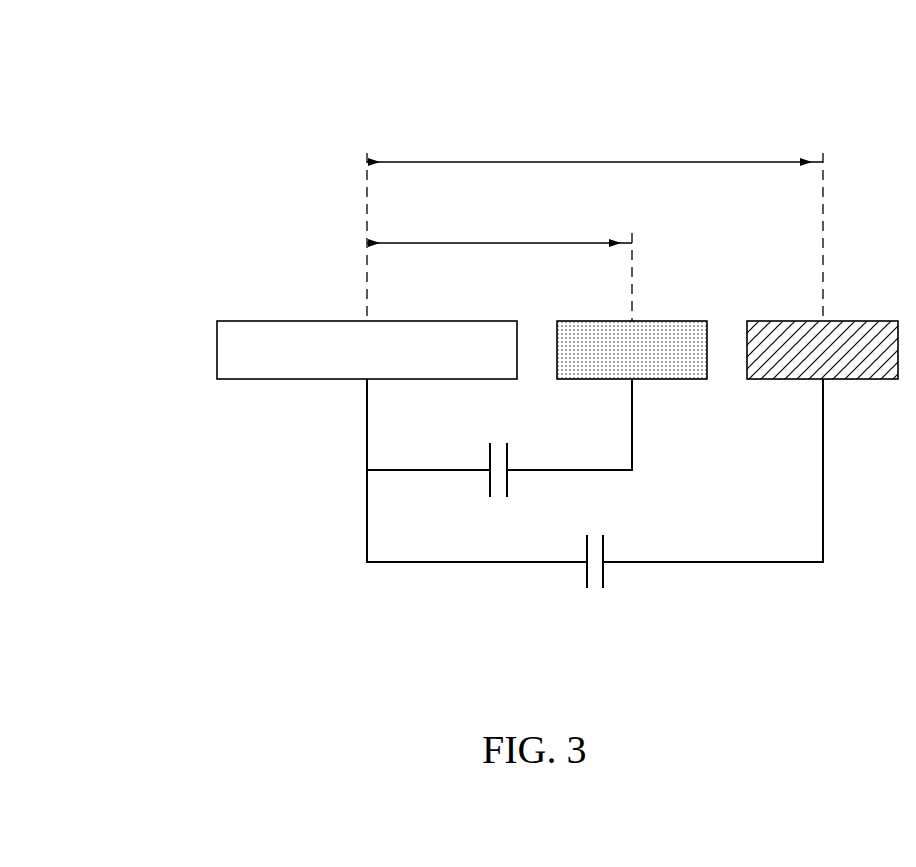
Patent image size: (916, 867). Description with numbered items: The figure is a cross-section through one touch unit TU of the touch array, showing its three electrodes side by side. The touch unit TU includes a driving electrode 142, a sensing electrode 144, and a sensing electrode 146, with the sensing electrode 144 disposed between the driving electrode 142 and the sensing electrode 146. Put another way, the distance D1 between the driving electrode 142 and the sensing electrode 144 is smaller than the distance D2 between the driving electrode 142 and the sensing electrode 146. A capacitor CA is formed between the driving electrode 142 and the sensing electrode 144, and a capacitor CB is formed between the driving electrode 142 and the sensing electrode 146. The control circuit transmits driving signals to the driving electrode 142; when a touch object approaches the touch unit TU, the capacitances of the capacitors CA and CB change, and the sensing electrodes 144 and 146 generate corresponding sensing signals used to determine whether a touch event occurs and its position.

The touch unit TU is at (153, 57).
The driving electrode 142 is at (288, 328).
The sensing electrode 144 is at (683, 328).
The sensing electrode 146 is at (878, 328).
The capacitor CA is at (497, 488).
The capacitor CB is at (591, 578).
The distance D1 is at (499, 228).
The distance D2 is at (595, 147).